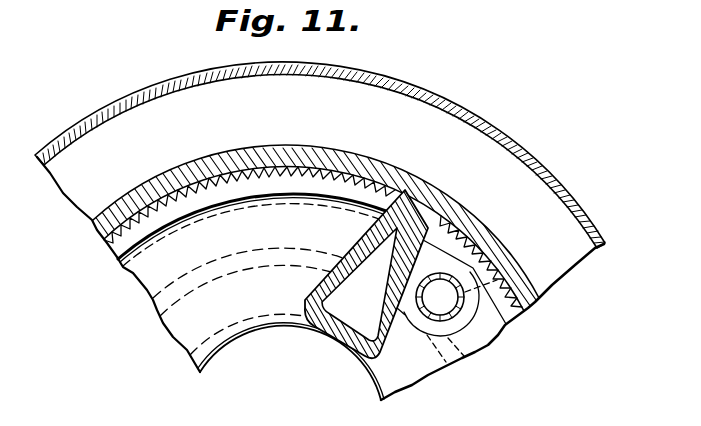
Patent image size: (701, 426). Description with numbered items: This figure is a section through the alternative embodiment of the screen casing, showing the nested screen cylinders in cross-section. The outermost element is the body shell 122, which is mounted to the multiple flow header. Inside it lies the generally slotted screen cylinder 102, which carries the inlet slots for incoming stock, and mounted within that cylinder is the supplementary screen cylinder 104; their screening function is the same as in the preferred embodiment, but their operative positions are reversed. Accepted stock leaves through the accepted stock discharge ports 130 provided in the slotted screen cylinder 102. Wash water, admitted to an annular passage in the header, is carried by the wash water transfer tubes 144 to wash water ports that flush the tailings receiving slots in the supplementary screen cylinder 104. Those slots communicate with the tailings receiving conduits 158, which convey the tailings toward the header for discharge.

The slotted screen cylinder 102 is at (338, 215).
The supplementary screen cylinder 104 is at (272, 198).
The body shell 122 is at (540, 163).
The accepted stock discharge ports 130 is at (252, 198).
The wash water transfer tubes 144 is at (453, 319).
The tailings receiving conduits 158 is at (380, 316).